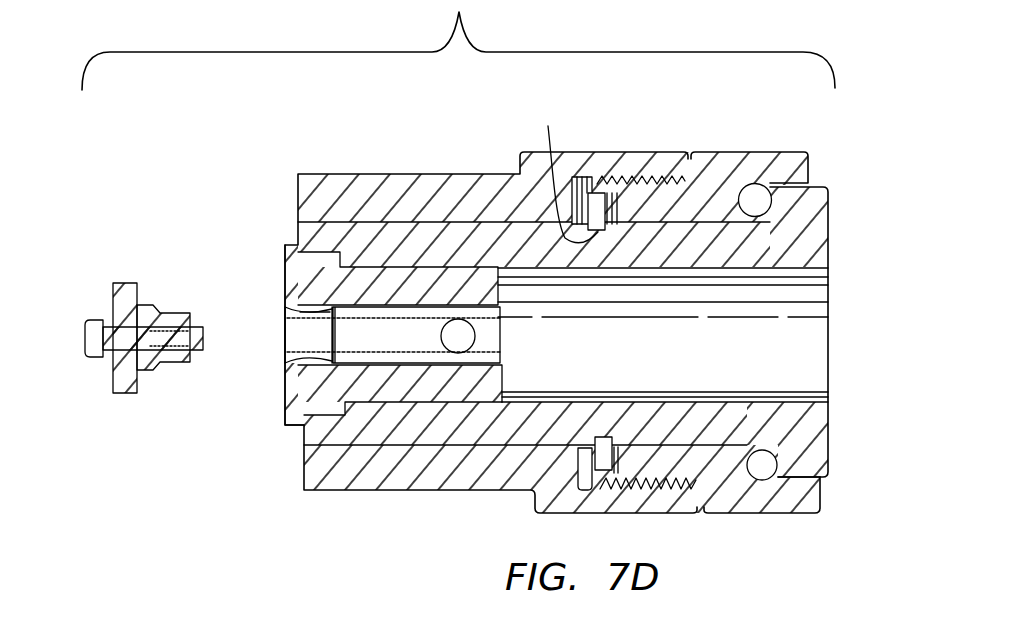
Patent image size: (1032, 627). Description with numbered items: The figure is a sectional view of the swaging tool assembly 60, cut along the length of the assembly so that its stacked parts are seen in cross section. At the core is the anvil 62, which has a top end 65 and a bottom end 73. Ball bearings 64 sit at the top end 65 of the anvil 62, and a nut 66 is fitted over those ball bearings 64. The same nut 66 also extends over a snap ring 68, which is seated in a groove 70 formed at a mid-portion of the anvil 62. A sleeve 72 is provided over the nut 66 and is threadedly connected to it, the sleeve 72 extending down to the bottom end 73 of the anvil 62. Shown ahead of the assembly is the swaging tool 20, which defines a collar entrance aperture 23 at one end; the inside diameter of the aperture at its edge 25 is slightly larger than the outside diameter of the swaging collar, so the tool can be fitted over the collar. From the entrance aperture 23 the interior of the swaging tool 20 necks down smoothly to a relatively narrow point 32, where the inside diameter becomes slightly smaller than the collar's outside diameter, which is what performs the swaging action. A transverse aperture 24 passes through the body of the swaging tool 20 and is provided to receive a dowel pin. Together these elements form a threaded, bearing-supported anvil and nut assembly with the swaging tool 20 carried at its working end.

The swaging tool assembly 60 is at (842, 98).
The sleeve 72 is at (467, 172).
The bottom end of the anvil 73 is at (298, 234).
The anvil 62 is at (830, 226).
The nut 66 is at (765, 150).
The snap ring 68 is at (598, 232).
The groove 70 is at (566, 171).
The ball bearings 64 is at (768, 479).
The top end of the anvil 65 is at (832, 477).
The transverse aperture 24 is at (441, 327).
The relatively narrow point 32 is at (307, 320).
The edge of the entrance aperture 25 is at (300, 310).
The collar entrance aperture 23 is at (275, 357).
The swaging tool 20 is at (288, 428).